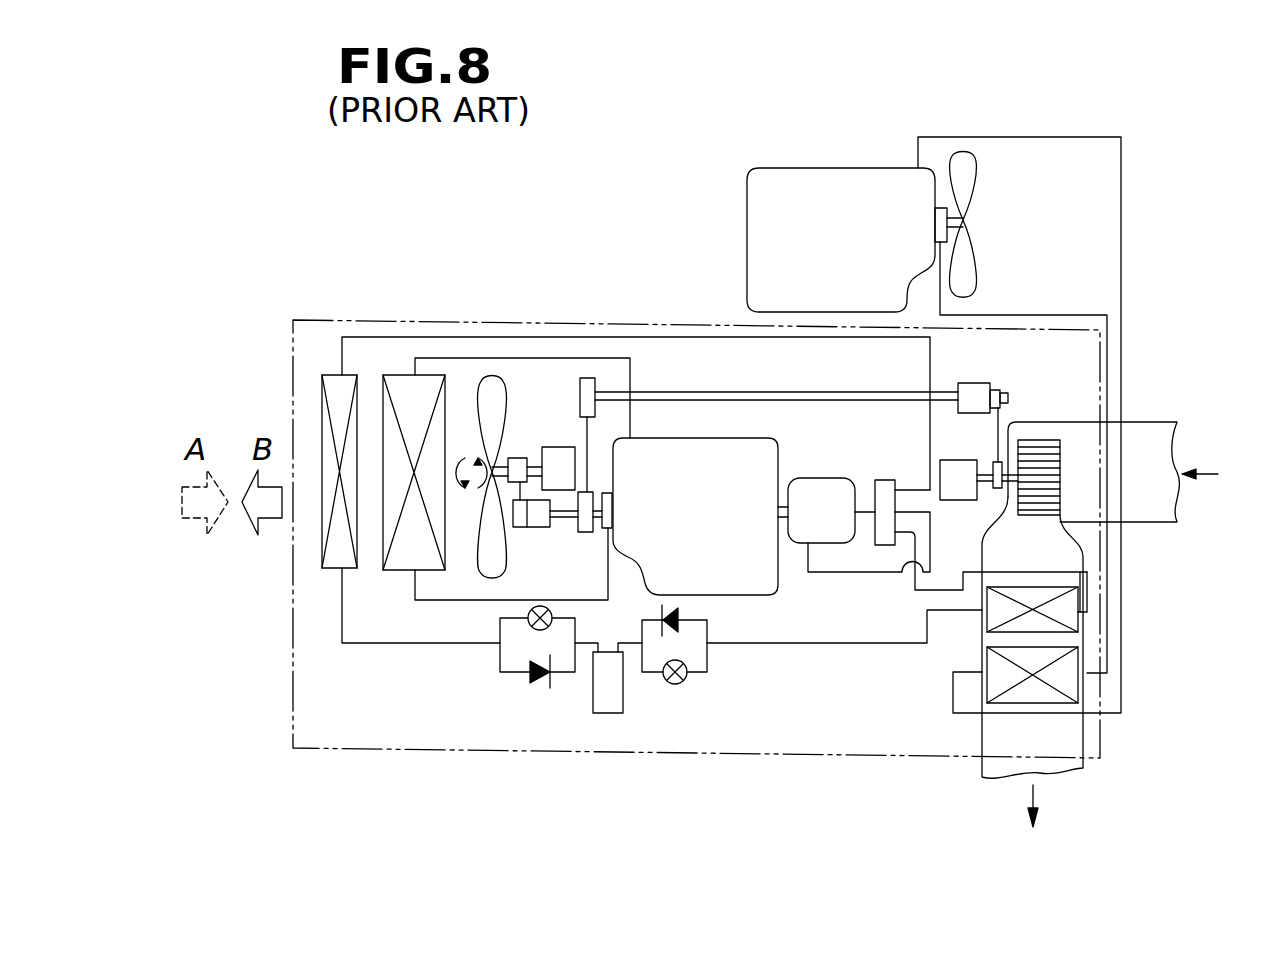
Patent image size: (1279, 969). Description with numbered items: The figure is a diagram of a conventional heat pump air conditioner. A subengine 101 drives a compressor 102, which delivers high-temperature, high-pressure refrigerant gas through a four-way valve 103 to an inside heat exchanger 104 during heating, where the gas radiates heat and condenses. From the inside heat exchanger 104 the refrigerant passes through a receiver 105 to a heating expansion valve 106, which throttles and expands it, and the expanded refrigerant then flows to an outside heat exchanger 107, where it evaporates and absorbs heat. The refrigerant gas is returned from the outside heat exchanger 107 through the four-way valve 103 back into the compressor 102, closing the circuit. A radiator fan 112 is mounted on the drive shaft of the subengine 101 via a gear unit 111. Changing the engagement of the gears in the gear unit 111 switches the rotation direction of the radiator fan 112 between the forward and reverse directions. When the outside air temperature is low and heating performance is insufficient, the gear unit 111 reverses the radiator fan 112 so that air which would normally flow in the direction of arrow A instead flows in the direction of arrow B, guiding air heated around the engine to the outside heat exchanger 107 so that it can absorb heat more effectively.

The subengine 101 is at (755, 595).
The compressor 102 is at (820, 478).
The four-way valve 103 is at (886, 480).
The inside heat exchanger 104 is at (1030, 633).
The receiver 105 is at (610, 715).
The heating expansion valve 106 is at (530, 605).
The outside heat exchanger 107 is at (318, 528).
The gear unit 111 is at (535, 530).
The radiator fan 112 is at (510, 396).